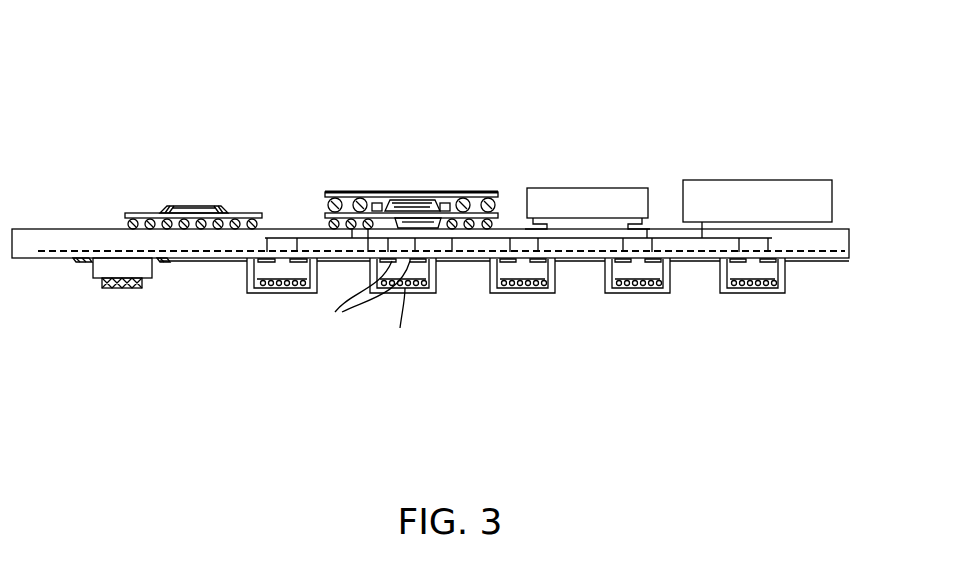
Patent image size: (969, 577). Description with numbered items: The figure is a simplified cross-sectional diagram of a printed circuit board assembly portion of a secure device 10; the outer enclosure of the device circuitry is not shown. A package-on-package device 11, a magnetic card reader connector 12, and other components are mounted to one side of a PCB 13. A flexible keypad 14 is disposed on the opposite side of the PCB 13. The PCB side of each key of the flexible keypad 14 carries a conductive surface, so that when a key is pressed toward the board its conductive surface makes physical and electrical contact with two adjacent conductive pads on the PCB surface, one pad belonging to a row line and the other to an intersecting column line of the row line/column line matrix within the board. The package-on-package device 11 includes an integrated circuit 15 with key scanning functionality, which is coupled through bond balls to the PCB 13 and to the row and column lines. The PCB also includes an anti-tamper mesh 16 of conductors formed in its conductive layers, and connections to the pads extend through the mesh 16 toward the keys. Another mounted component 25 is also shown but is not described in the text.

The secure device 10 is at (182, 92).
The package-on-package device 11 is at (406, 190).
The magnetic card reader connector 12 is at (738, 180).
The printed circuit board 13 is at (850, 254).
The flexible keypad 14 is at (637, 294).
The integrated circuit 15 is at (410, 220).
The anti-tamper mesh 16 is at (183, 258).
The component 25 is at (193, 206).